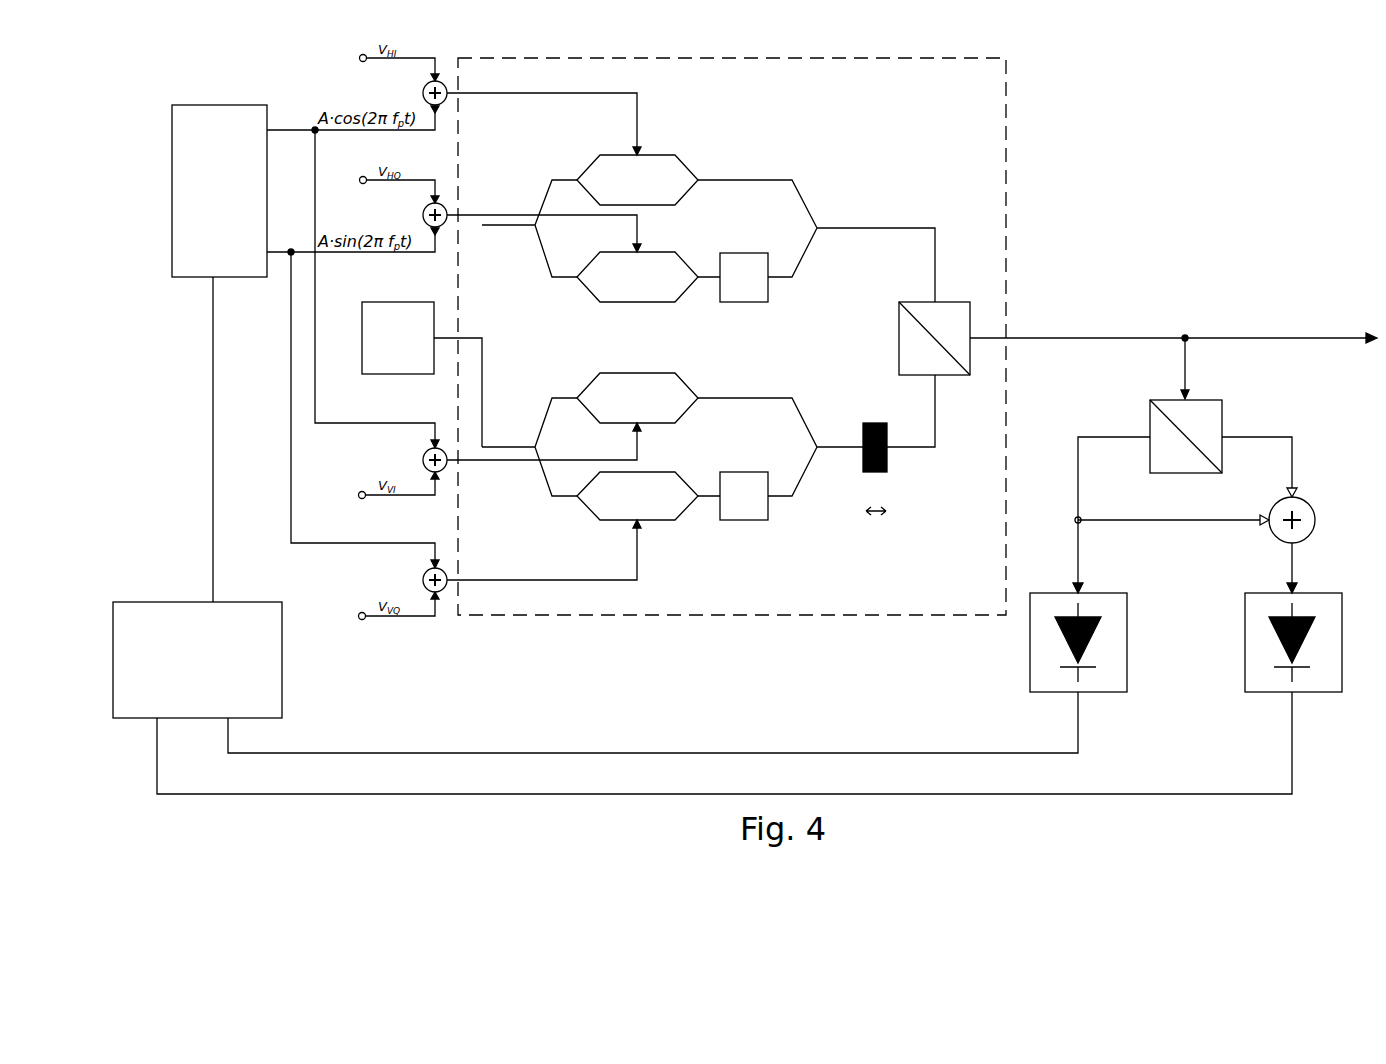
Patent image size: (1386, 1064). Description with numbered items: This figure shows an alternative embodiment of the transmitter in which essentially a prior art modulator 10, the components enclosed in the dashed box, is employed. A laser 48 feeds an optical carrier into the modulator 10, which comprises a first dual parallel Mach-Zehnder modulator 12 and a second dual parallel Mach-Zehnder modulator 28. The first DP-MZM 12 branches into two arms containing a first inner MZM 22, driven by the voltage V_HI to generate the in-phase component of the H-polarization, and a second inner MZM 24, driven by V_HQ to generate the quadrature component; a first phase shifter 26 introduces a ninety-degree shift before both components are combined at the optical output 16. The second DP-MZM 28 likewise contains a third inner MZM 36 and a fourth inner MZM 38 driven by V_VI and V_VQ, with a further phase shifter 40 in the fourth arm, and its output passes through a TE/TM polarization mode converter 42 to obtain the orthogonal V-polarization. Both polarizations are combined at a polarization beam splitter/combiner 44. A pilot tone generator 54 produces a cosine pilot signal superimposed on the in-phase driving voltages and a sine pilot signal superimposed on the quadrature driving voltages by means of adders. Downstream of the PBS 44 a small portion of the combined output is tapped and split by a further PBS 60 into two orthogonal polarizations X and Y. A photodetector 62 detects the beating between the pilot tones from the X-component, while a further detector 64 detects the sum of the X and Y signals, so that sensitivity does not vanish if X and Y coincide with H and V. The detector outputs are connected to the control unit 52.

The modulator 10 is at (1006, 165).
The first dual parallel Mach-Zehnder modulator 12 is at (778, 155).
The optical output 16 is at (845, 228).
The first inner MZM 22 is at (657, 170).
The second inner MZM 24 is at (661, 266).
The first phase shifter 26 is at (766, 294).
The second dual parallel Mach-Zehnder modulator 28 is at (760, 390).
The third inner MZM 36 is at (653, 385).
The fourth inner MZM 38 is at (658, 487).
The phase shifter 40 is at (753, 512).
The TE/TM polarization mode converter 42 is at (888, 462).
The polarization beam splitter/combiner 44 is at (962, 322).
The laser 48 is at (381, 361).
The control unit 52 is at (272, 690).
The pilot tone generator 54 is at (185, 141).
The further PBS 60 is at (1215, 418).
The photodetector 62 is at (1030, 673).
The further detector 64 is at (1320, 690).